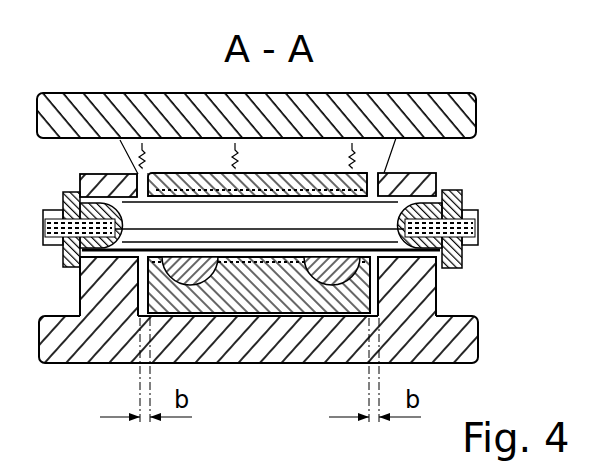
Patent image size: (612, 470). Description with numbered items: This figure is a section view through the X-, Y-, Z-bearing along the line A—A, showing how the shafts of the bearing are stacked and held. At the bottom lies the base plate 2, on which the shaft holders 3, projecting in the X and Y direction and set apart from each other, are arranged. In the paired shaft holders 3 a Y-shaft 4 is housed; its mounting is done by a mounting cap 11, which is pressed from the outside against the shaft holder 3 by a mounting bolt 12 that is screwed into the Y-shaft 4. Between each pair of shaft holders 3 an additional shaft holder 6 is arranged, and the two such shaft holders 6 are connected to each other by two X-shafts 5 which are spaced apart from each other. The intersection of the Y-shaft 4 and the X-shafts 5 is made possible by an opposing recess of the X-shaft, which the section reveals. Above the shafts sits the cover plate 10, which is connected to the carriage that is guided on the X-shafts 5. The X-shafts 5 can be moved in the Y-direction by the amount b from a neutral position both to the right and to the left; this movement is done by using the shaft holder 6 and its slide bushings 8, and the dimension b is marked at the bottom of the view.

The base plate 2 is at (473, 345).
The shaft holder 3 is at (100, 174).
The Y-shaft 4 is at (272, 233).
The X-shaft 5 is at (200, 283).
The shaft holder 6 is at (252, 292).
The slide bushing 8 is at (173, 174).
The cover plate 10 is at (468, 110).
The mounting cap 11 is at (463, 197).
The mounting bolt 12 is at (480, 228).